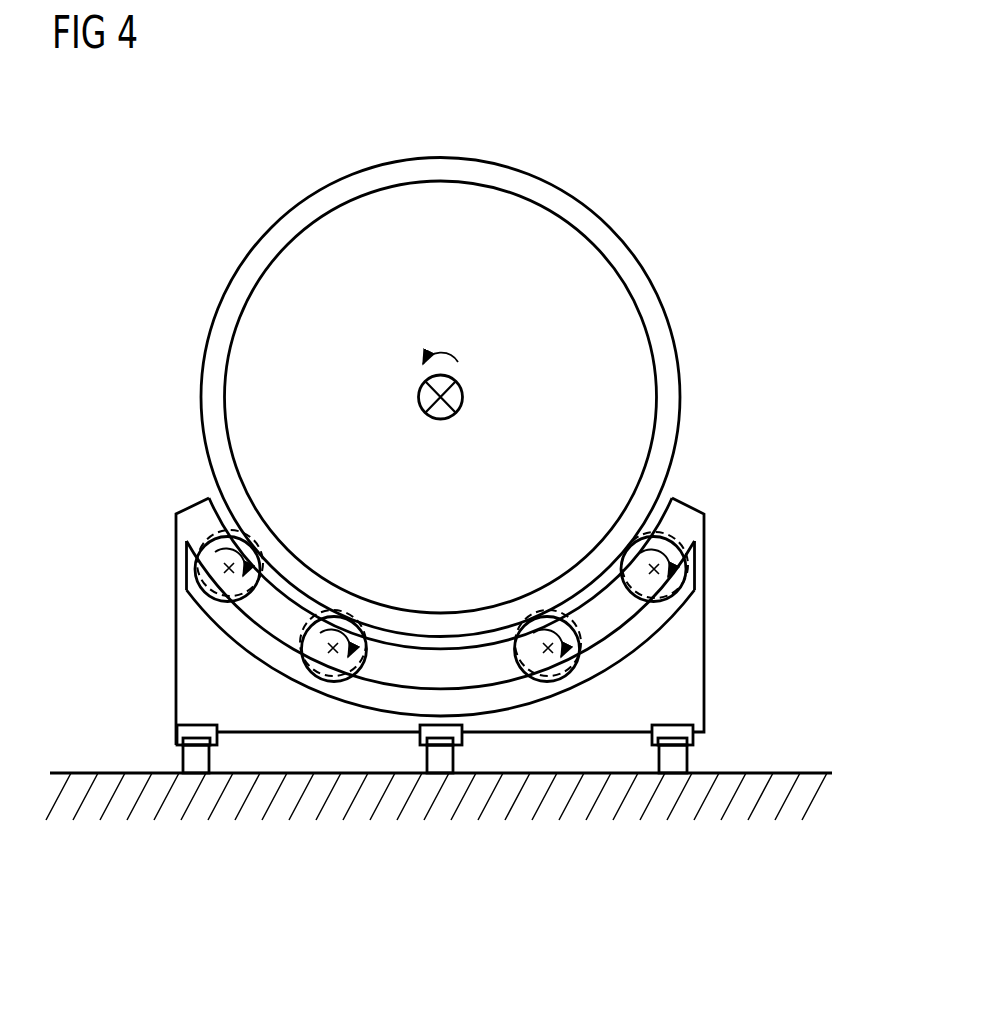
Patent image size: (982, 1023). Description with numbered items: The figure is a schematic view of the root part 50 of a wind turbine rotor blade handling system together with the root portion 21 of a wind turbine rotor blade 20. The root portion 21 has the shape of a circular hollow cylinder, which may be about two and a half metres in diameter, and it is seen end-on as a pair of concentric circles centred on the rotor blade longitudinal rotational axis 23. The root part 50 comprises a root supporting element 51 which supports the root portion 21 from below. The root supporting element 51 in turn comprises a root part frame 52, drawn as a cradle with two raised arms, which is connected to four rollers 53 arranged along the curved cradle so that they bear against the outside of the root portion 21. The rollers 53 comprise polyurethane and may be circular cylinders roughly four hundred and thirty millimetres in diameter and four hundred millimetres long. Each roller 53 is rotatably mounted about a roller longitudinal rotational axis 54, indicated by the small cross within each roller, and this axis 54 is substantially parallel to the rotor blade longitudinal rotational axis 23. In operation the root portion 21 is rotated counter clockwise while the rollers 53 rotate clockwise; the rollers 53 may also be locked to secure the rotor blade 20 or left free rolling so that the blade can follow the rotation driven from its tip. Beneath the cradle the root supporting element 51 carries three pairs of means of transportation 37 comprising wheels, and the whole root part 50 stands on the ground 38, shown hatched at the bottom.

The wind turbine rotor blade 20 is at (482, 397).
The root portion 21 is at (660, 338).
The rotor blade longitudinal rotational axis 23 is at (453, 397).
The means of transportation 37 is at (205, 757).
The ground 38 is at (767, 775).
The root part 50 is at (521, 601).
The root supporting element 51 is at (697, 688).
The root part frame 52 is at (688, 516).
The rollers 53 is at (203, 580).
The roller longitudinal rotational axis 54 is at (231, 566).